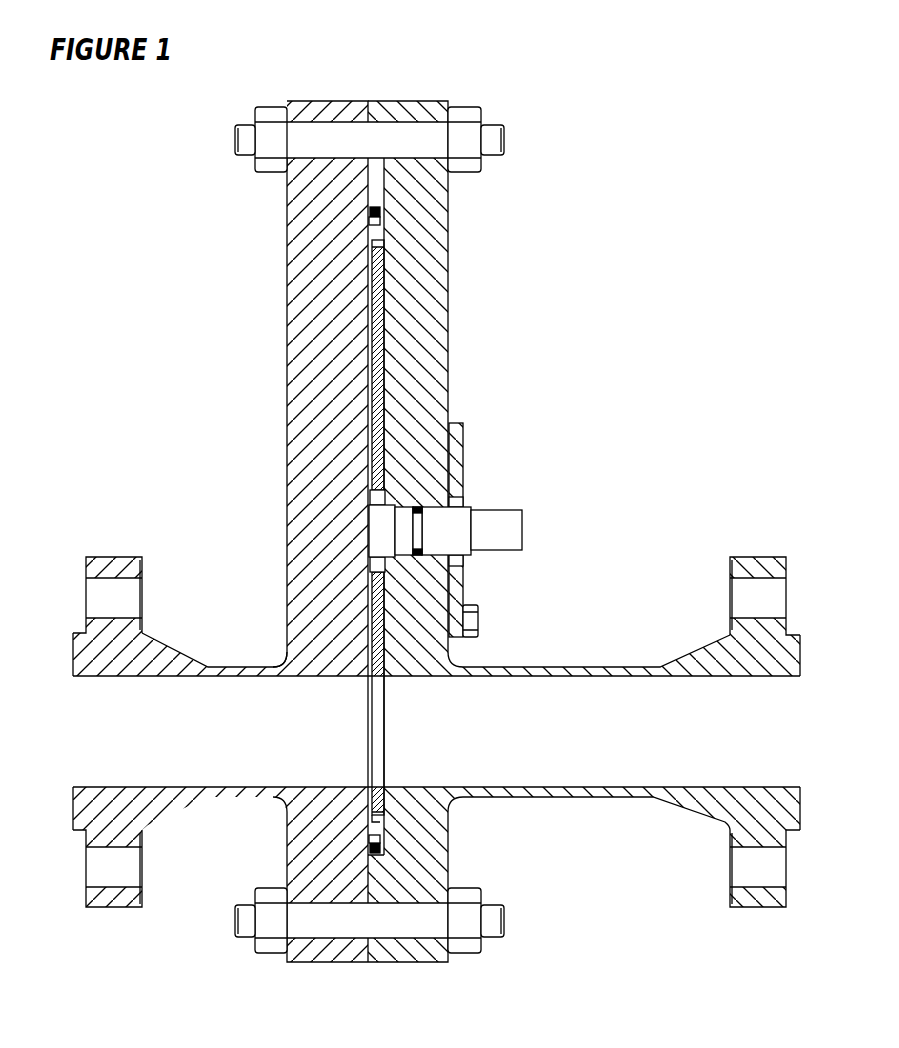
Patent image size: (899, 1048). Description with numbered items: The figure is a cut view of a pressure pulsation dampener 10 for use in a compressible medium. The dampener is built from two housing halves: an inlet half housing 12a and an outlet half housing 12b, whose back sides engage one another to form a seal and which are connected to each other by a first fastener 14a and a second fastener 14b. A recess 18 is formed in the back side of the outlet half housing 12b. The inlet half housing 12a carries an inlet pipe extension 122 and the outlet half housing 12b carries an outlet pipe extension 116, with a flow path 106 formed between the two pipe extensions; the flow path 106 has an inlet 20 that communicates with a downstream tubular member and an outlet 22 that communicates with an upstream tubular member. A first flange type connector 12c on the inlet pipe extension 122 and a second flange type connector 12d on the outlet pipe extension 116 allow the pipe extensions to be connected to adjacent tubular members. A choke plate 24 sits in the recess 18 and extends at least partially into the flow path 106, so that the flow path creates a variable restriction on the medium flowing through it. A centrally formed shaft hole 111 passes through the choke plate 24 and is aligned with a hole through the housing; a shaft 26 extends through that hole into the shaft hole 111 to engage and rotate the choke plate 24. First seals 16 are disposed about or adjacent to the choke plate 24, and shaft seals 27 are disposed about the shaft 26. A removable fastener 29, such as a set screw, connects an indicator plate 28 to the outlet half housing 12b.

The pressure pulsation dampener 10 is at (673, 102).
The inlet half housing 12a is at (328, 100).
The outlet half housing 12b is at (406, 100).
The first flange type connector 12c is at (113, 557).
The second flange type connector 12d is at (758, 557).
The first fastener 14a is at (505, 141).
The second fastener 14b is at (505, 921).
The first seal 16 is at (380, 210).
The recess 18 is at (389, 239).
The inlet 20 is at (70, 731).
The outlet 22 is at (803, 733).
The choke plate 24 is at (378, 708).
The shaft 26 is at (532, 530).
The shaft seal 27 is at (418, 507).
The indicator plate 28 is at (463, 466).
The removable fastener 29 is at (478, 621).
The flow path 106 is at (557, 700).
The centrally formed shaft hole 111 is at (366, 486).
The outlet pipe extension 116 is at (566, 799).
The inlet pipe extension 122 is at (238, 666).